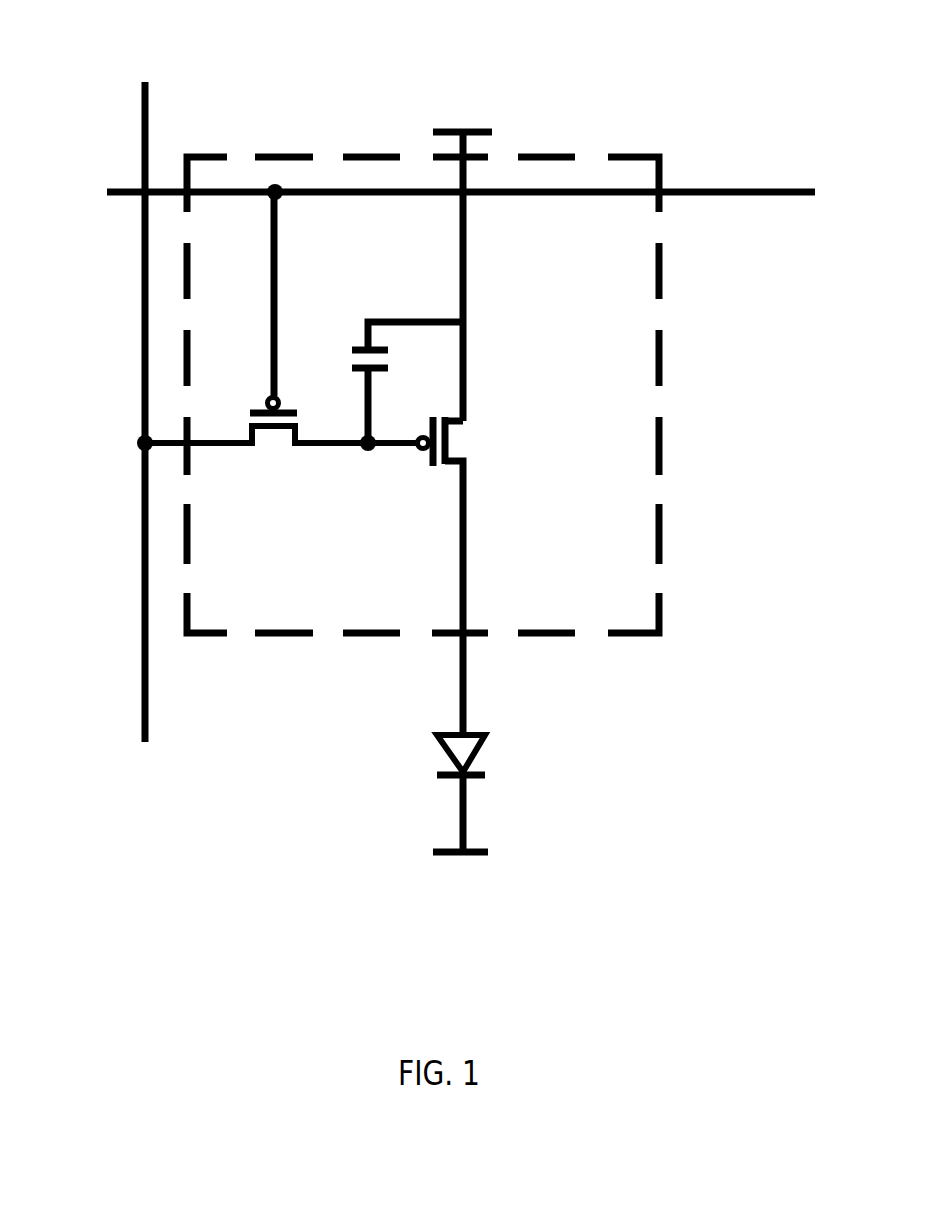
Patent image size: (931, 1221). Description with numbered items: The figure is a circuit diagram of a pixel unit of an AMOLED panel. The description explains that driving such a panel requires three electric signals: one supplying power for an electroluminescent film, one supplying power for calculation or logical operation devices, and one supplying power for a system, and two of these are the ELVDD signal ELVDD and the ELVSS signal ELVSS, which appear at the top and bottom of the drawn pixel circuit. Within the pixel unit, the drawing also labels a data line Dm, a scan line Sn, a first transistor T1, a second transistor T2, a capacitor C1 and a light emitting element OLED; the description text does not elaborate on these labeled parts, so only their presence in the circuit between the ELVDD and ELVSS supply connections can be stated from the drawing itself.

The data line Dm is at (148, 382).
The scan line Sn is at (431, 184).
The ELVDD signal ELVDD is at (469, 244).
The switching transistor T1 is at (281, 353).
The driving transistor T2 is at (471, 575).
The storage capacitor C1 is at (384, 379).
The organic light emitting diode OLED is at (512, 793).
The ELVSS signal ELVSS is at (463, 885).